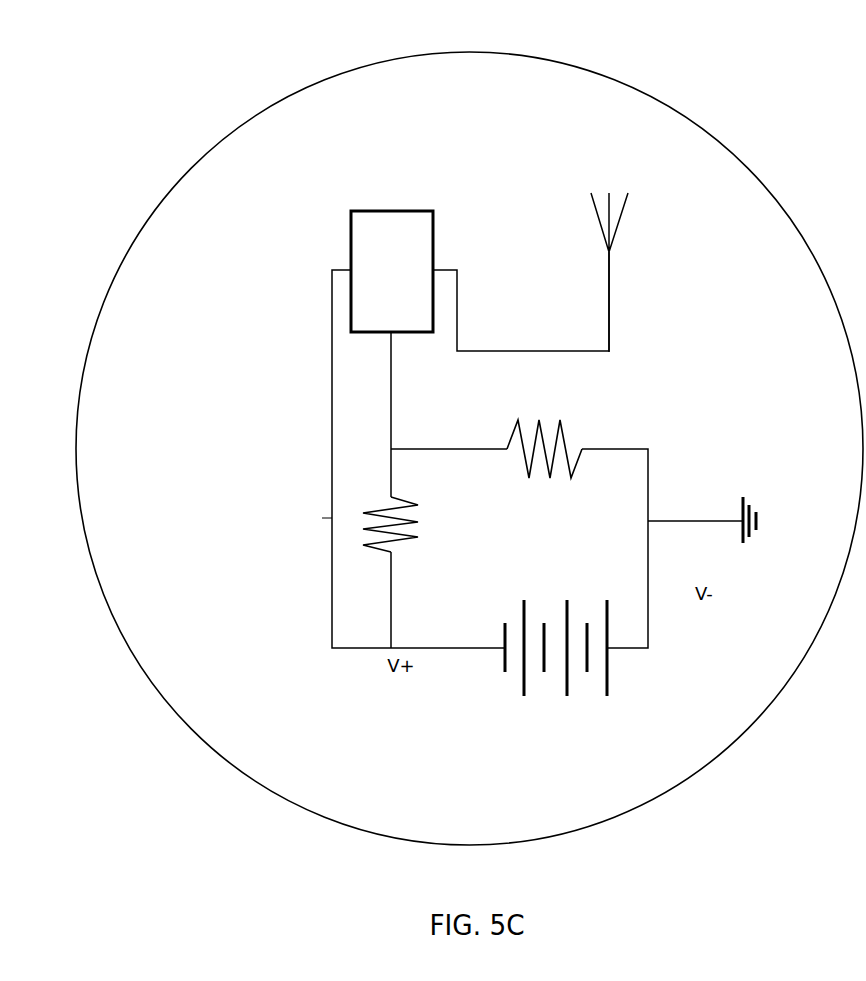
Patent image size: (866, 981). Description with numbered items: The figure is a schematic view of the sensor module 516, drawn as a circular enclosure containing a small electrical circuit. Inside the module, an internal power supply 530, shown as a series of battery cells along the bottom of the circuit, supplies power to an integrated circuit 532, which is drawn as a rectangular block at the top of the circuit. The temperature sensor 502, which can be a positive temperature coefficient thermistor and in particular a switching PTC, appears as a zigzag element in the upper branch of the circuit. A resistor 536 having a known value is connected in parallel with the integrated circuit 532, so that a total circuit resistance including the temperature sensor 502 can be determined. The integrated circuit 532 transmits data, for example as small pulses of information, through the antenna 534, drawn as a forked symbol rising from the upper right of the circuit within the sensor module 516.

The sensor module 516 is at (175, 93).
The integrated circuit 532 is at (392, 271).
The antenna 534 is at (650, 236).
The temperature sensor 502 is at (585, 413).
The resistor 536 is at (440, 520).
The internal power supply 530 is at (542, 720).